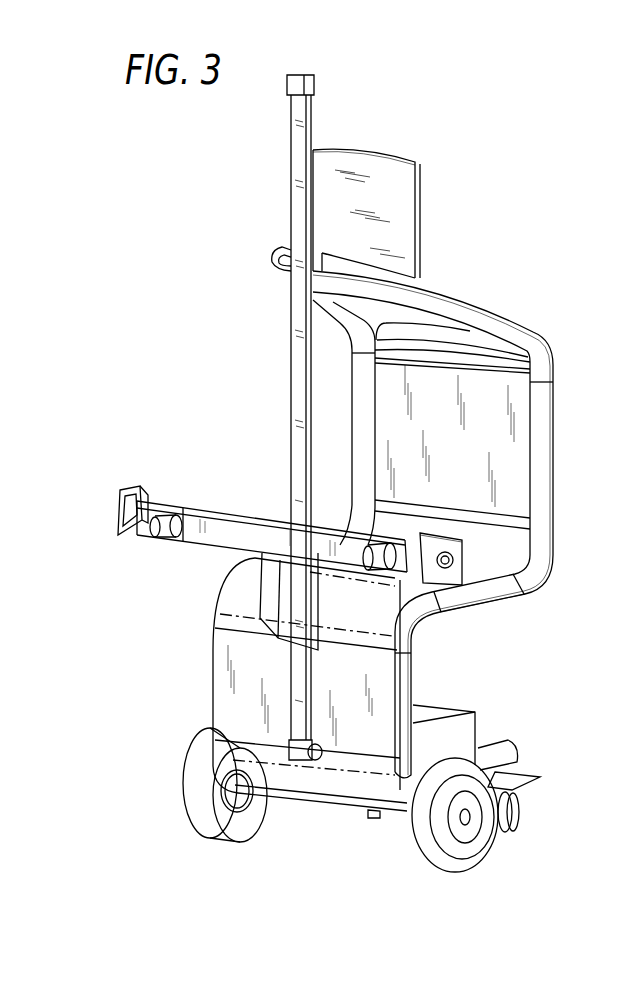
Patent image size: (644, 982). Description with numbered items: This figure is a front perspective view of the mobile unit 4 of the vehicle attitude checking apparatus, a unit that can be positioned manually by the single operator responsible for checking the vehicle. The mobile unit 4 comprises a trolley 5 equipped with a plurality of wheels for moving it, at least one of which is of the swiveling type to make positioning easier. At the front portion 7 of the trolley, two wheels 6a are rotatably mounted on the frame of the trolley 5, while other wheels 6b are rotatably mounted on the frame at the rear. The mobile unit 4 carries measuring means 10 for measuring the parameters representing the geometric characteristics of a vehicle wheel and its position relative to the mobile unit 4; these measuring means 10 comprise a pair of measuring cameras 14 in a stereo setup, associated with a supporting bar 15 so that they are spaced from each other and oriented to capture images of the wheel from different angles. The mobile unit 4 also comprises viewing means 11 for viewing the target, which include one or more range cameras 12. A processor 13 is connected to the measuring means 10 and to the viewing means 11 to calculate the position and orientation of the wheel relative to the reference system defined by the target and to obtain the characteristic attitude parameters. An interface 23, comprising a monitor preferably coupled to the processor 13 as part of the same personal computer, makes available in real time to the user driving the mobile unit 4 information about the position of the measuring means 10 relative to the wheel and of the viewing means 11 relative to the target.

The mobile unit 4 is at (565, 397).
The trolley 5 is at (545, 582).
The wheels 6a is at (190, 800).
The wheels 6b is at (518, 818).
The front portion 7 is at (228, 703).
The measuring means 10 is at (150, 540).
The viewing means 11 is at (118, 500).
The range camera 12 is at (452, 560).
The processor 13 is at (405, 312).
The measuring camera 14 is at (165, 541).
The supporting bar 15 is at (222, 540).
The interface 23 is at (373, 185).